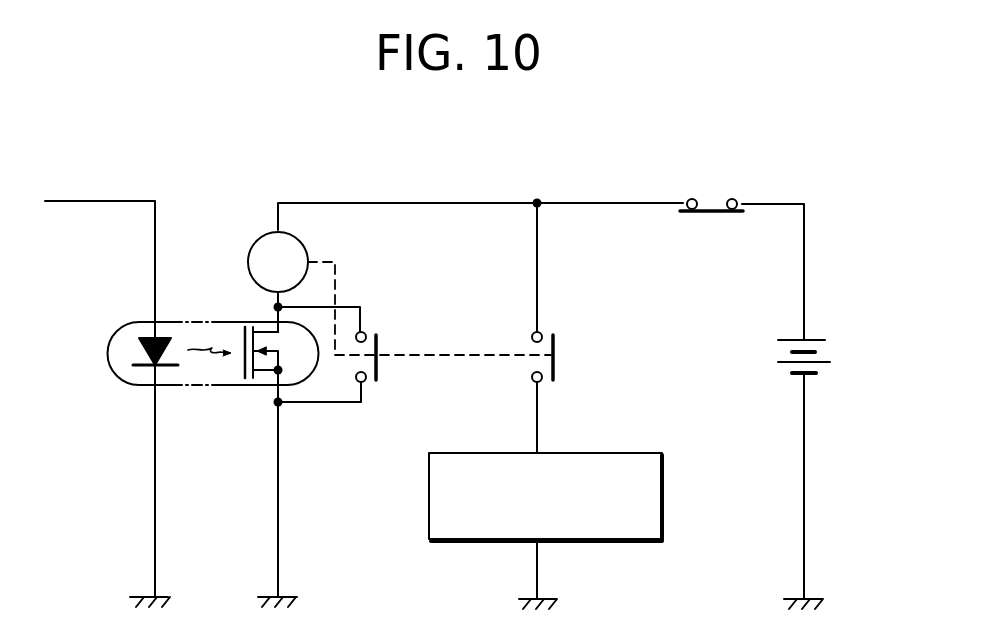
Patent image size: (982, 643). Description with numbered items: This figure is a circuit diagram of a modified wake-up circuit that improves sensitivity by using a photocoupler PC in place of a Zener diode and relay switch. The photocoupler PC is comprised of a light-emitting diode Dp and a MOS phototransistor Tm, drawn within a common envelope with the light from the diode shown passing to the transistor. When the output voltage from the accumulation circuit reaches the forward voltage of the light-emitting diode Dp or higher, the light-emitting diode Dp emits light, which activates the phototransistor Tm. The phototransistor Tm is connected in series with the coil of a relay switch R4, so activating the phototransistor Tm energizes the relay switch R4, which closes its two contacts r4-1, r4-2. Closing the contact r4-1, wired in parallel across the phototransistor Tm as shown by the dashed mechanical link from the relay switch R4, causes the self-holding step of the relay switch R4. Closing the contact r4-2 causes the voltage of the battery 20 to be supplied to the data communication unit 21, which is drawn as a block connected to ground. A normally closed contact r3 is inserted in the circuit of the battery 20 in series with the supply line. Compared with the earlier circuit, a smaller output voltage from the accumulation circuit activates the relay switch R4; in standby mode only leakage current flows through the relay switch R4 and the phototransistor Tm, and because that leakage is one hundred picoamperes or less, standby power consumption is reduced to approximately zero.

The photocoupler PC is at (112, 328).
The light-emitting diode Dp is at (145, 350).
The MOS phototransistor Tm is at (237, 366).
The relay switch R4 is at (278, 262).
The contact r4-1 is at (378, 347).
The contact r4-2 is at (558, 347).
The normally closed contact r3 is at (720, 212).
The battery 20 is at (818, 340).
The data communication unit 21 is at (664, 497).